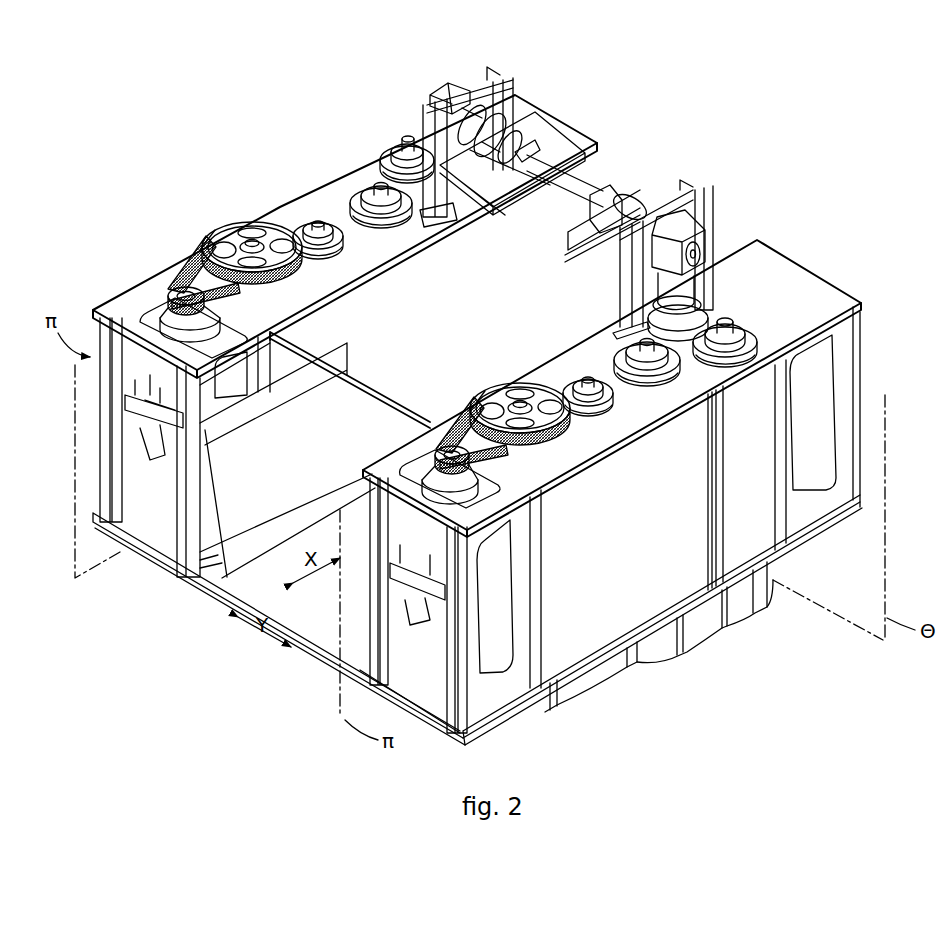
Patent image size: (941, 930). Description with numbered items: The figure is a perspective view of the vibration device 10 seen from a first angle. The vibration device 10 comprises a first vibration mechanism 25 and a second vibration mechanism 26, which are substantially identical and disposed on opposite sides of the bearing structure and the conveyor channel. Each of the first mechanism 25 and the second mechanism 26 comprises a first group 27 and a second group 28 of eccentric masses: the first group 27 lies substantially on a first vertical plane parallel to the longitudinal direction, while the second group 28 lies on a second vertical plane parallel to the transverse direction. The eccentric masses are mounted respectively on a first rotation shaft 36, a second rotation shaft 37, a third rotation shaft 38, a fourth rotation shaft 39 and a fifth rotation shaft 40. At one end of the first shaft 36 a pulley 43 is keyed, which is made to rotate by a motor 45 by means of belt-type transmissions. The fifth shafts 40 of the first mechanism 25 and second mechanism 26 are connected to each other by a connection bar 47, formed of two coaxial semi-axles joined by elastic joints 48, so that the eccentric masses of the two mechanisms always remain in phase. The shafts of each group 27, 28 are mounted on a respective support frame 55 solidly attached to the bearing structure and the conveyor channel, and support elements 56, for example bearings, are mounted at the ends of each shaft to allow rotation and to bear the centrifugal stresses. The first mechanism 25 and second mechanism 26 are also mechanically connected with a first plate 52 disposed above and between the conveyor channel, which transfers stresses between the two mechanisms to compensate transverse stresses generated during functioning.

The vibration device 10 is at (145, 115).
The first vibration mechanism 25 is at (232, 95).
The second vibration mechanism 26 is at (550, 330).
The first group of eccentric masses 27 is at (285, 190).
The second group of eccentric masses 28 is at (407, 113).
The first rotation shaft 36 is at (253, 250).
The second rotation shaft 37 is at (340, 234).
The third rotation shaft 38 is at (375, 198).
The fourth rotation shaft 39 is at (396, 140).
The fifth rotation shaft 40 is at (650, 280).
The pulley 43 is at (228, 248).
The motor 45 is at (172, 300).
The connection bar 47 is at (570, 217).
The elastic joints 48 is at (473, 97).
The first plate 52 is at (362, 367).
The support frame 55 is at (110, 412).
The support elements 56 is at (365, 165).